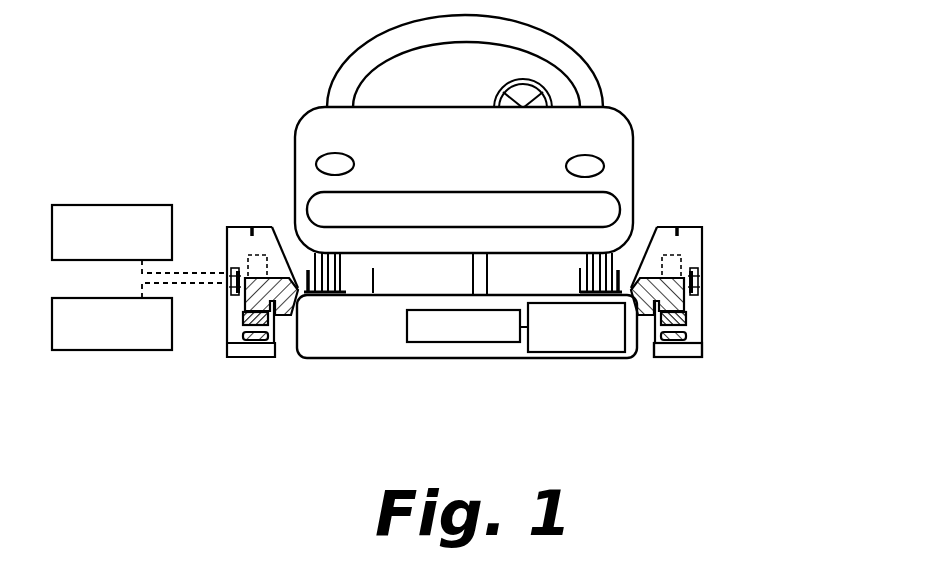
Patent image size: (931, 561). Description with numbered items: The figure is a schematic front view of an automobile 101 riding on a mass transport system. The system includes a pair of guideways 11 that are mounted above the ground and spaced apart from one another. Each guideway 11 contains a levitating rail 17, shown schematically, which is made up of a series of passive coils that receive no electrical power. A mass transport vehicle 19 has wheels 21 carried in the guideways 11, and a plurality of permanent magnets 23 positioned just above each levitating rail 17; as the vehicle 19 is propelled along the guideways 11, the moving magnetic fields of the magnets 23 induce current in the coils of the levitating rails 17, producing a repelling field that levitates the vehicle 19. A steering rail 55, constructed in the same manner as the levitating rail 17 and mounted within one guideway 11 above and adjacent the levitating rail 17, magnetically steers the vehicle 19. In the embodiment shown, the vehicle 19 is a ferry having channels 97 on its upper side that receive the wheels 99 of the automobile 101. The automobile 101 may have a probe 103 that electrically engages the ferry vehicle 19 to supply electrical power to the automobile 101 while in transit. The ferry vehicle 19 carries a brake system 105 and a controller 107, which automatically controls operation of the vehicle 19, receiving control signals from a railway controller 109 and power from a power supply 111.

The guideway 11 is at (668, 362).
The levitating rail 17 is at (703, 345).
The mass transport vehicle 19 is at (340, 358).
The wheel 21 is at (683, 267).
The permanent magnet 23 is at (683, 318).
The steering rail 55 is at (702, 232).
The channel 97 is at (300, 252).
The wheel 99 is at (612, 262).
The automobile 101 is at (610, 130).
The probe 103 is at (475, 290).
The brake system 105 is at (583, 352).
The controller 107 is at (428, 342).
The railway controller 109 is at (120, 205).
The power supply 111 is at (112, 350).